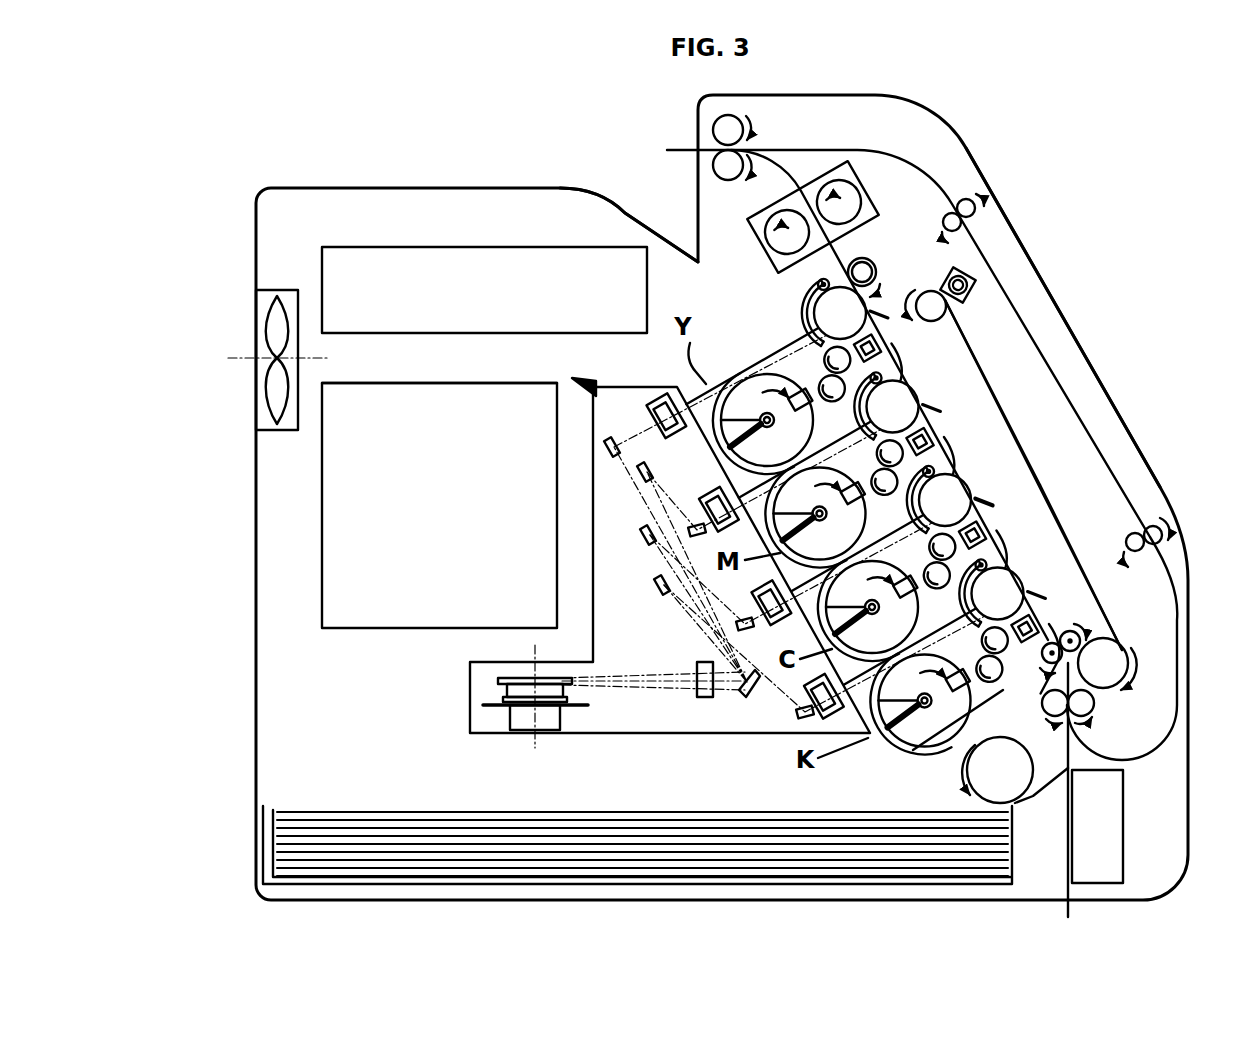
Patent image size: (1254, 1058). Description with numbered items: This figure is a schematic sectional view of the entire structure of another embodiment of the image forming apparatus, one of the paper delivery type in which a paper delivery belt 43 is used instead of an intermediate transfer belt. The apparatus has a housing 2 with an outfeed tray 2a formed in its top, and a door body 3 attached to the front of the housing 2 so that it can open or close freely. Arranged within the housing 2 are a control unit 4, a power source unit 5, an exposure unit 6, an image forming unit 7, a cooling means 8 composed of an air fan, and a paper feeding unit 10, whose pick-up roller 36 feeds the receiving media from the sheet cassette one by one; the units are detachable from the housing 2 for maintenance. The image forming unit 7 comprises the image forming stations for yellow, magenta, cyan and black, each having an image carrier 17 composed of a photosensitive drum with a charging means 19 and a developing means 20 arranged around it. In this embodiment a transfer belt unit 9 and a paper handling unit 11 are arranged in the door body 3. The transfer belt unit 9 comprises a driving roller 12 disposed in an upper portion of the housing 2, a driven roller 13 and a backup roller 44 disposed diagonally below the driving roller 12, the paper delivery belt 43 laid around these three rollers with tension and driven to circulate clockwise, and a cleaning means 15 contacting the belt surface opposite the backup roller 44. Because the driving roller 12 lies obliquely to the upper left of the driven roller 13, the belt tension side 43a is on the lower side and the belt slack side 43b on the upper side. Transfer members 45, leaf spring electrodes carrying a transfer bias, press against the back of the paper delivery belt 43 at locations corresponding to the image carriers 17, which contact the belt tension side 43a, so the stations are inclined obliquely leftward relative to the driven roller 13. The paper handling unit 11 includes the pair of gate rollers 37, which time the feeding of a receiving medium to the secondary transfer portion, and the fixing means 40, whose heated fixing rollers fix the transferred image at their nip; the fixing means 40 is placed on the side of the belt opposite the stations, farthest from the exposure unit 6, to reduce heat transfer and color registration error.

The housing 2 is at (256, 568).
The outfeed tray 2a is at (634, 208).
The door body 3 is at (1122, 407).
The control unit 4 is at (458, 298).
The power source unit 5 is at (428, 512).
The exposure unit 6 is at (439, 361).
The image forming unit 7 is at (783, 386).
The cooling means 8 is at (276, 434).
The transfer belt unit 9 is at (1046, 480).
The paper feeding unit 10 is at (358, 804).
The paper handling unit 11 is at (1070, 392).
The driving roller 12 is at (871, 258).
The driven roller 13 is at (1128, 657).
The cleaning means 15 is at (978, 272).
The image carrier 17 is at (812, 319).
The charging means 19 is at (887, 374).
The developing means 20 is at (913, 750).
The pick-up roller 36 is at (1003, 753).
The gate rollers 37 is at (1094, 701).
The fixing means 40 is at (876, 177).
The paper delivery belt 43 is at (999, 385).
The belt tension side 43a is at (1003, 543).
The belt slack side 43b is at (1103, 603).
The backup roller 44 is at (957, 314).
The transfer members 45 is at (990, 505).